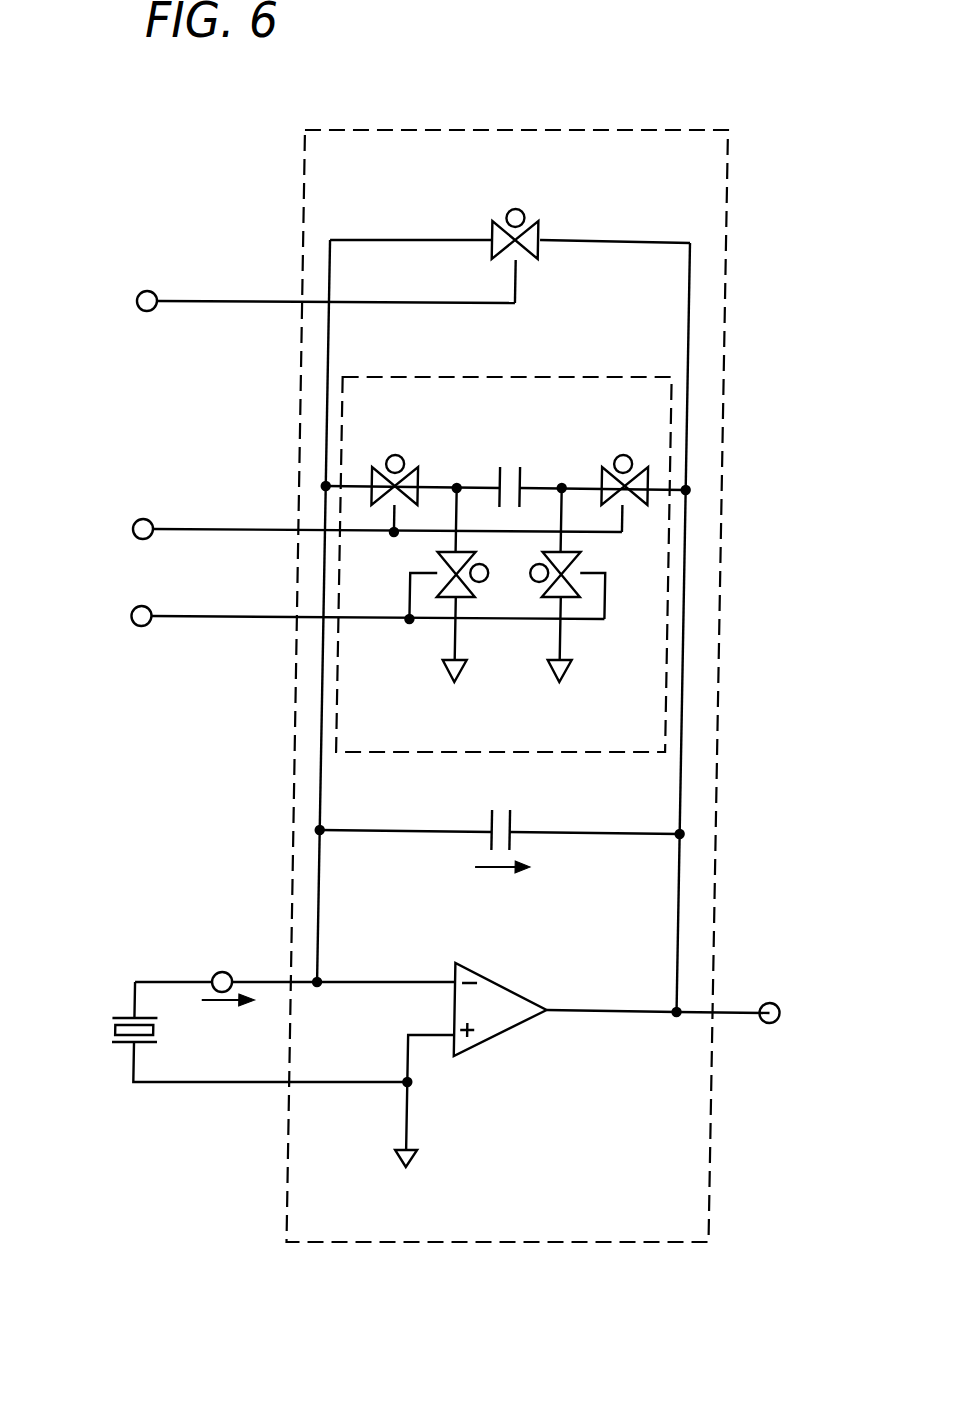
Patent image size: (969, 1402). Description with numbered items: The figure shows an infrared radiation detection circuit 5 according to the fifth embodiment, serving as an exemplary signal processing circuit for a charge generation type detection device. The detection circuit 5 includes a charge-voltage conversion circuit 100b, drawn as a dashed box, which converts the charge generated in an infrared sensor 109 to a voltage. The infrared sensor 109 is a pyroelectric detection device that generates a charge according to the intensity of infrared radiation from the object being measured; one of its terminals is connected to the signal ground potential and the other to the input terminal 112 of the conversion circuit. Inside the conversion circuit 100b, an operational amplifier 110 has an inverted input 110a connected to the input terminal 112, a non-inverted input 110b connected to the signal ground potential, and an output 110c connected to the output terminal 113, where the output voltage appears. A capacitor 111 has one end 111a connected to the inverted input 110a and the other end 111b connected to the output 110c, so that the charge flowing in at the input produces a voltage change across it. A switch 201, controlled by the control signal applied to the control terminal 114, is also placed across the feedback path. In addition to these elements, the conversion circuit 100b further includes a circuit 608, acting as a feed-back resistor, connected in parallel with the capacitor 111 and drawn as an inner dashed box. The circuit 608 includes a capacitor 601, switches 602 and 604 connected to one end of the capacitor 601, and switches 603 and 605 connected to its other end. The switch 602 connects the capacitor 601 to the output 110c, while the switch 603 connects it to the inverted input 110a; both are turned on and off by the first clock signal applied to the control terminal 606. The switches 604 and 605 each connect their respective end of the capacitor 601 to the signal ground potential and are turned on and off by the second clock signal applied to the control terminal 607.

The infrared radiation detection circuit 5 is at (507, 1283).
The charge-voltage conversion circuit 100b is at (423, 128).
The switch 201 is at (507, 210).
The control terminal 114 is at (140, 291).
The circuit (feed-back resistor) 608 is at (588, 375).
The switch 603 is at (391, 455).
The capacitor 601 is at (496, 470).
The switch 602 is at (619, 455).
The switch 605 is at (435, 567).
The switch 604 is at (580, 565).
The control terminal 606 is at (140, 519).
The control terminal 607 is at (133, 608).
The capacitor 111 is at (499, 837).
The one end of the capacitor 111a is at (494, 836).
The other end of the capacitor 111b is at (514, 836).
The input terminal 112 is at (220, 973).
The infrared sensor 109 is at (118, 1030).
The operational amplifier 110 is at (567, 1064).
The inverted input 110a is at (458, 980).
The non-inverted input 110b is at (459, 1042).
The output 110c is at (552, 1008).
The output terminal 113 is at (775, 1003).